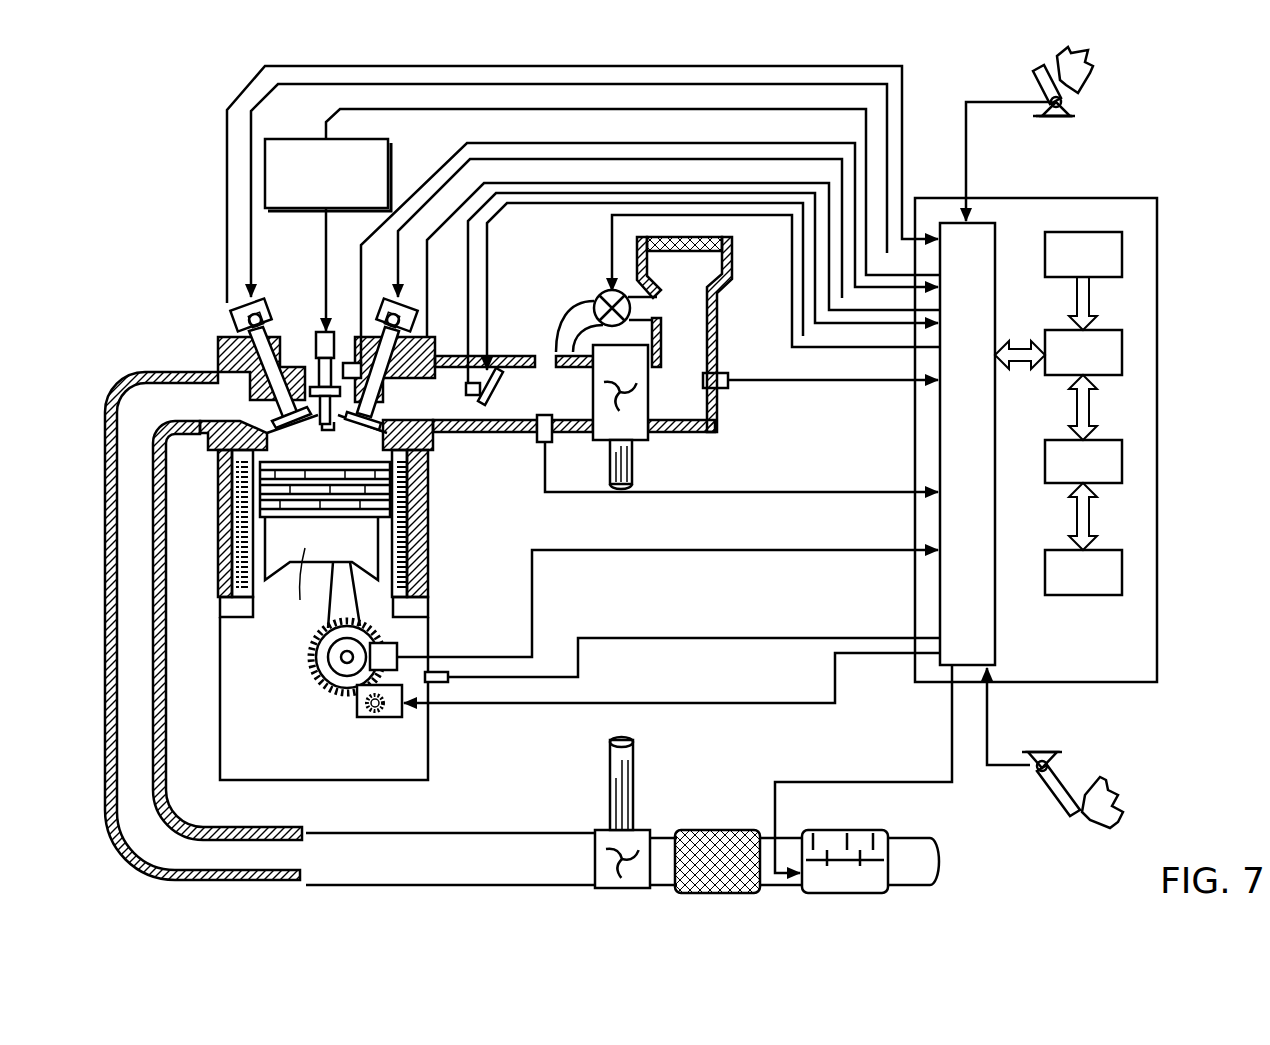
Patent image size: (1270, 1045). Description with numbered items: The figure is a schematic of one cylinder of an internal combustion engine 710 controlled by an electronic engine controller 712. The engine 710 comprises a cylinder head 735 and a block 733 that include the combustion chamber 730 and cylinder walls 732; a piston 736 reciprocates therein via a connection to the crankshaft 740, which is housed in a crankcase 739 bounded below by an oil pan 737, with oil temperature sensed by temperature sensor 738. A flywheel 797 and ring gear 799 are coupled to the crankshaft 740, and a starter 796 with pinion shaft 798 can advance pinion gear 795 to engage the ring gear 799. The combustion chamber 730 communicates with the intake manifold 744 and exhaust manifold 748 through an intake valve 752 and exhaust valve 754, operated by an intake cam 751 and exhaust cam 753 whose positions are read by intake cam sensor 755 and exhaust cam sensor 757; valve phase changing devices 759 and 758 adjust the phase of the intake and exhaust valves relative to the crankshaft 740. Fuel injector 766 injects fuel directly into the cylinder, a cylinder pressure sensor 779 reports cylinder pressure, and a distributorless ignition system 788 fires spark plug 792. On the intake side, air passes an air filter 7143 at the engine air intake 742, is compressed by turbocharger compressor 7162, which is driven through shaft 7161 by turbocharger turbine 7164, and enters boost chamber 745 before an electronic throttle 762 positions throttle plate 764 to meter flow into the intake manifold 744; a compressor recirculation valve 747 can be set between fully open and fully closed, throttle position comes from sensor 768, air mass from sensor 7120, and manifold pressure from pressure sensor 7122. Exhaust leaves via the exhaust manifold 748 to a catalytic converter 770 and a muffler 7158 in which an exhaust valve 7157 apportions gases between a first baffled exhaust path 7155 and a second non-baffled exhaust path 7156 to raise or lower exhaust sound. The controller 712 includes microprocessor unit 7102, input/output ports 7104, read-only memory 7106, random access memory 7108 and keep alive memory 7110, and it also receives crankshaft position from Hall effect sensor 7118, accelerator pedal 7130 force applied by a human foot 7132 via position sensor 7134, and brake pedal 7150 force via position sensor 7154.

The internal combustion engine 710 is at (285, 553).
The electronic engine controller 712 is at (1089, 424).
The combustion chamber 730 is at (322, 440).
The cylinder walls 732 is at (262, 598).
The engine block 733 is at (222, 490).
The cylinder head 735 is at (212, 336).
The piston 736 is at (308, 570).
The oil pan 737 is at (428, 770).
The temperature sensor 738 is at (447, 677).
The crankcase 739 is at (235, 705).
The crankshaft 740 is at (319, 679).
The engine air intake 742 is at (611, 325).
The intake manifold 744 is at (481, 426).
The boost chamber 745 is at (629, 373).
The compressor recirculation valve 747 is at (605, 292).
The exhaust manifold 748 is at (203, 626).
The intake cam 751 is at (386, 300).
The intake valve 752 is at (378, 414).
The exhaust cam 753 is at (262, 297).
The exhaust valve 754 is at (270, 412).
The intake cam sensor 755 is at (406, 324).
The exhaust cam sensor 757 is at (240, 316).
The valve phase changing device 758 is at (268, 320).
The valve phase changing device 759 is at (408, 308).
The electronic throttle 762 is at (497, 391).
The throttle plate 764 is at (486, 404).
The fuel injector 766 is at (420, 440).
The throttle position sensor 768 is at (458, 357).
The catalytic converter 770 is at (690, 830).
The cylinder pressure sensor 779 is at (352, 363).
The distributorless ignition system 788 is at (282, 139).
The spark plug 792 is at (318, 330).
The pinion gear 795 is at (374, 717).
The starter 796 is at (368, 724).
The flywheel 797 is at (318, 662).
The pinion shaft 798 is at (362, 712).
The ring gear 799 is at (332, 697).
The microprocessor unit 7102 is at (1122, 352).
The input/output ports 7104 is at (996, 232).
The read-only memory 7106 is at (1122, 250).
The random access memory 7108 is at (1122, 460).
The keep alive memory 7110 is at (1122, 570).
The Hall effect sensor 7118 is at (398, 648).
The air mass sensor 7120 is at (727, 374).
The pressure sensor 7122 is at (537, 428).
The accelerator pedal 7130 is at (1095, 86).
The human foot 7132 is at (1090, 63).
The position sensor 7134 is at (1078, 104).
The air filter 7143 is at (710, 251).
The brake pedal 7150 is at (1070, 814).
The position sensor 7154 is at (1057, 779).
The first baffled exhaust path 7155 is at (862, 866).
The second non-baffled exhaust path 7156 is at (858, 878).
The exhaust valve 7157 is at (815, 880).
The muffler 7158 is at (843, 832).
The shaft 7161 is at (612, 447).
The turbocharger compressor 7162 is at (640, 420).
The turbocharger turbine 7164 is at (621, 812).